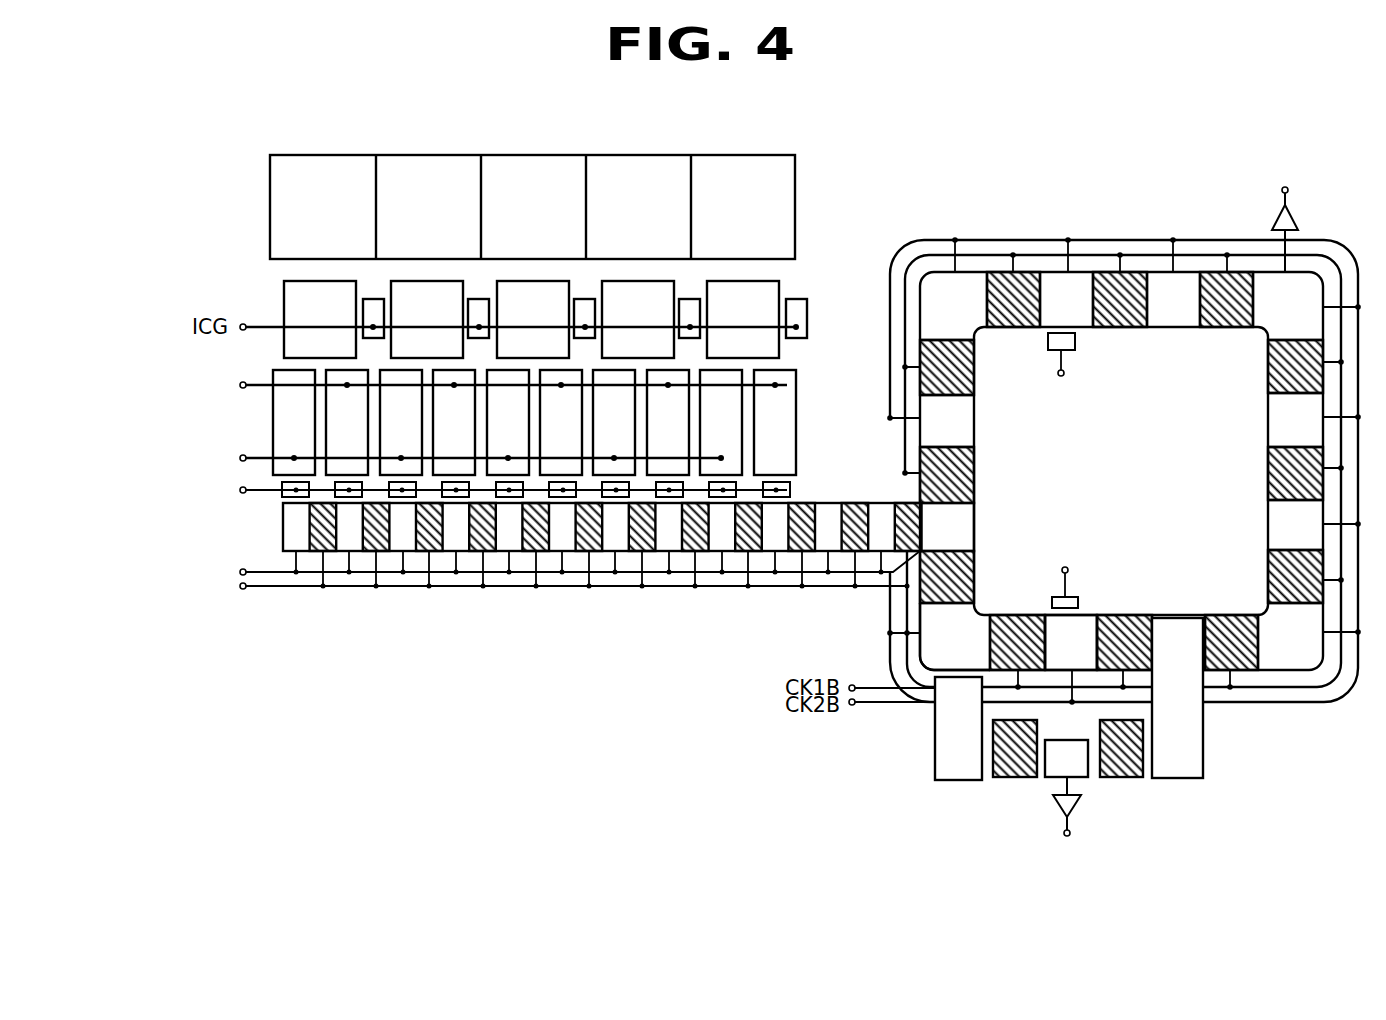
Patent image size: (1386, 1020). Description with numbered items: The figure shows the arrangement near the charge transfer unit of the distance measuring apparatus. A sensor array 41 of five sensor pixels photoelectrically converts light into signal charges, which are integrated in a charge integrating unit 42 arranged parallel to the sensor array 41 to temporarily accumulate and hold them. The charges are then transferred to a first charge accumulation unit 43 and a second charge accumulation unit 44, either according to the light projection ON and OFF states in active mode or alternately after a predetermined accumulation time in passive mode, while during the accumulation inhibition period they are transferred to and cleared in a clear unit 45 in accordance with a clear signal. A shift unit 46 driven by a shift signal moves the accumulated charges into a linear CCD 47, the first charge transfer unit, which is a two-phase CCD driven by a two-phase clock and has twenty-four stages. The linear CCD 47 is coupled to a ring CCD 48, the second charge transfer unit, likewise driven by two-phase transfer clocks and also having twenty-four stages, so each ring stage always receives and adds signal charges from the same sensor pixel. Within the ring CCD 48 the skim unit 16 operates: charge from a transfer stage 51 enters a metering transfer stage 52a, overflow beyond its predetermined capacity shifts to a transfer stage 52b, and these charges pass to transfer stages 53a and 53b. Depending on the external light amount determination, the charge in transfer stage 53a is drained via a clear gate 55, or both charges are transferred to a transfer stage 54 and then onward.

The sensor array 41 is at (291, 155).
The charge integrating unit 42 is at (284, 300).
The first charge accumulation unit 43 is at (787, 383).
The second charge accumulation unit 44 is at (730, 422).
The clear unit 45 is at (802, 297).
The shift unit 46 is at (285, 491).
The linear CCD 47 is at (815, 637).
The ring CCD 48 is at (1330, 178).
The transfer stage 51 is at (966, 522).
The metering transfer stage 52a is at (928, 613).
The transfer stage 52b is at (935, 770).
The transfer stage 53a is at (1082, 627).
The transfer stage 53b is at (1060, 767).
The transfer stage 54 is at (1203, 750).
The clear gate 55 is at (1073, 595).
The skim unit 16 is at (1068, 803).